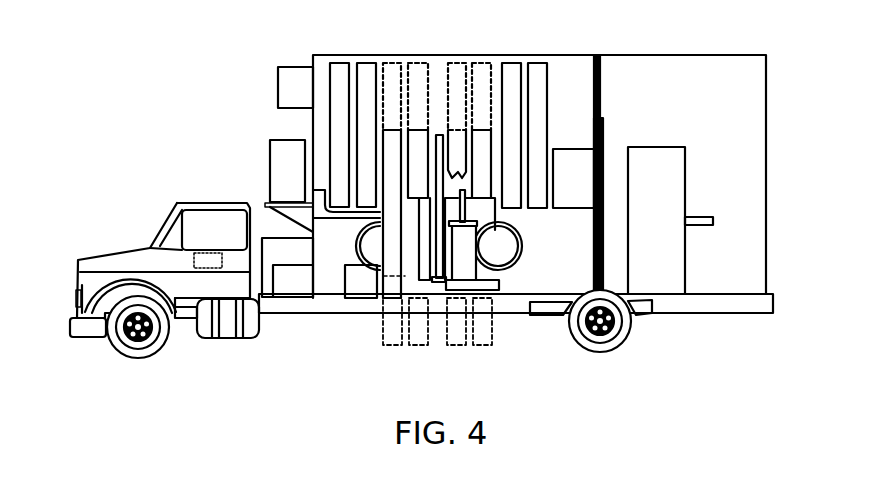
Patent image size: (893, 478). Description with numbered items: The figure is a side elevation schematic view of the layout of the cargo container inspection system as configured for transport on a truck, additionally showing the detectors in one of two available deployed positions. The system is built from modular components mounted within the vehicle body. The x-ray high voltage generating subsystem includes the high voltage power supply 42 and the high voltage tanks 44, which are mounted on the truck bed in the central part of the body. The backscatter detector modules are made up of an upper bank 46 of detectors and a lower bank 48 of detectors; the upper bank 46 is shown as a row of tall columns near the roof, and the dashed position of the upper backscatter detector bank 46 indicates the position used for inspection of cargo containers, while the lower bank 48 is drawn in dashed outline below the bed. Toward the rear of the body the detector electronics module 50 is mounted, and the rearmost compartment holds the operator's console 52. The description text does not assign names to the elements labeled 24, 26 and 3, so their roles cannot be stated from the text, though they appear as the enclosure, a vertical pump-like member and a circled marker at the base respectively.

The enclosure / truck body 24 is at (574, 60).
The pump 26 is at (443, 262).
The base plate (circled section reference) 3 is at (503, 290).
The high voltage power supply 42 is at (345, 266).
The high voltage tanks 44 is at (470, 241).
The upper bank of detectors 46 is at (366, 63).
The lower bank of detectors 48 is at (392, 347).
The detector electronics module 50 is at (573, 208).
The operator's console 52 is at (678, 153).